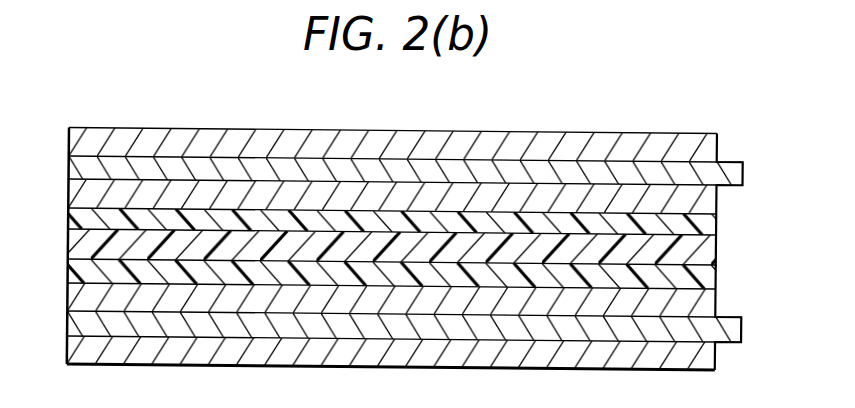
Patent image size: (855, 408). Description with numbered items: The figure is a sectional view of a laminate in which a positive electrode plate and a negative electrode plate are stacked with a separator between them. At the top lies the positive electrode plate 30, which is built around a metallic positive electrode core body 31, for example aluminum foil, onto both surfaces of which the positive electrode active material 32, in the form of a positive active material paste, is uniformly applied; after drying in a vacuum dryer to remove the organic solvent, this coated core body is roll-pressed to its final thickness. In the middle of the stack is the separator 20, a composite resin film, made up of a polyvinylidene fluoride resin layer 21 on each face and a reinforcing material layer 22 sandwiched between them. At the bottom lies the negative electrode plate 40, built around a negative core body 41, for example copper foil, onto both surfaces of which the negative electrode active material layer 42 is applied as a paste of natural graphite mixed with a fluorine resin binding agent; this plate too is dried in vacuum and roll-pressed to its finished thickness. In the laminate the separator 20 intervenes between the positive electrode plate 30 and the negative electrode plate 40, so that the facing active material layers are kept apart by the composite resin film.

The positive electrode plate 30 is at (63, 128).
The positive electrode core body 31 is at (742, 174).
The positive electrode active material 32 is at (712, 143).
The separator (composite resin film) 20 is at (63, 209).
The polyvinylidene fluoride resin layer 21 is at (717, 222).
The reinforcing material layer 22 is at (717, 250).
The negative electrode plate 40 is at (63, 284).
The negative core body 41 is at (742, 327).
The negative electrode active material layer 42 is at (717, 299).